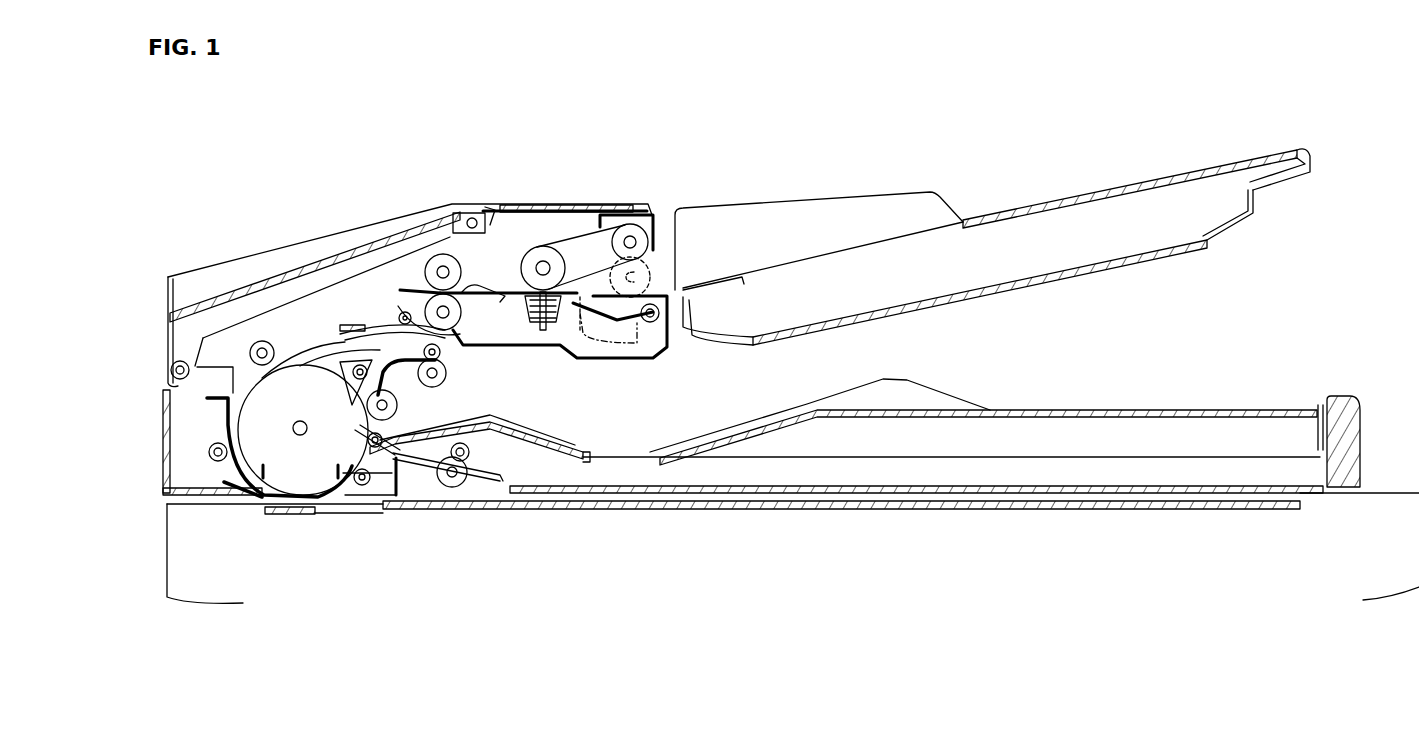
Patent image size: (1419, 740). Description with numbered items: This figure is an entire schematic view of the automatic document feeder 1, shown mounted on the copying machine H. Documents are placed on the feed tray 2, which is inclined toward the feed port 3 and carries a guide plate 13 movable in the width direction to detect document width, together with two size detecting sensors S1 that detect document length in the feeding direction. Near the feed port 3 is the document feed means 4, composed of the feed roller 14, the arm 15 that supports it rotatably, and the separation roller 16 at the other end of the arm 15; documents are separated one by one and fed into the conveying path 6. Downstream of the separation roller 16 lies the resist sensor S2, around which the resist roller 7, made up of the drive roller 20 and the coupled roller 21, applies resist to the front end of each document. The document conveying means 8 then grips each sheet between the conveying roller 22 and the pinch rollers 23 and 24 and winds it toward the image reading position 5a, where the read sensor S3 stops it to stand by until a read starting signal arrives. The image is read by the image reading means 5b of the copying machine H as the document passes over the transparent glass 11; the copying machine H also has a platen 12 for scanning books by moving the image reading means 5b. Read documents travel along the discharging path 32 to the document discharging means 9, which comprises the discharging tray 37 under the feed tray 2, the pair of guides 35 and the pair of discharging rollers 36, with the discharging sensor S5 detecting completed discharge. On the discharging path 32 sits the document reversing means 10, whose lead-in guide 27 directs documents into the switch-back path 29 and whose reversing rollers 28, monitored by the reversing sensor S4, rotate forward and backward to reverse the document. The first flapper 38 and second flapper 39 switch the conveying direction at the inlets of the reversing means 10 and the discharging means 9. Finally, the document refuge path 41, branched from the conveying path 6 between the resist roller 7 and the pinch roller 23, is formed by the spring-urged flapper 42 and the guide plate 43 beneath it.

The automatic document feeder 1 is at (678, 162).
The feed tray 2 is at (1073, 193).
The feed port 3 is at (660, 263).
The document feed means 4 is at (563, 228).
The image reading position 5a is at (277, 500).
The image reading means 5b is at (300, 522).
The conveying path 6 is at (300, 340).
The resist roller 7 is at (453, 228).
The document conveying means 8 is at (226, 413).
The document discharging means 9 is at (760, 426).
The document reversing means 10 is at (545, 465).
The transparent glass 11 is at (273, 517).
The platen 12 is at (737, 510).
The guide plate 13 is at (828, 207).
The feed roller 14 is at (638, 213).
The arm 15 is at (583, 228).
The separation roller 16 is at (543, 232).
The drive roller 20 is at (443, 250).
The coupled roller 21 is at (477, 287).
The conveying roller 22 is at (226, 428).
The pinch roller 23 is at (250, 343).
The pinch roller 24 is at (210, 456).
The lead-in guide 27 is at (413, 500).
The reversing rollers 28 is at (468, 485).
The switch-back path 29 is at (863, 470).
The discharging path 32 is at (353, 500).
The pair of guides 35 is at (447, 372).
The discharging rollers 36 is at (447, 383).
The discharging tray 37 is at (817, 410).
The first flapper 38 is at (357, 450).
The second flapper 39 is at (337, 395).
The document refuge path 41 is at (388, 310).
The flapper 42 is at (325, 342).
The guide plate 43 is at (303, 341).
The size detecting sensors S1 is at (987, 232).
The resist sensor S2 is at (484, 306).
The read sensor S3 is at (241, 479).
The reversing sensor S4 is at (414, 467).
The discharging sensor S5 is at (404, 376).
The copying machine H is at (1387, 493).